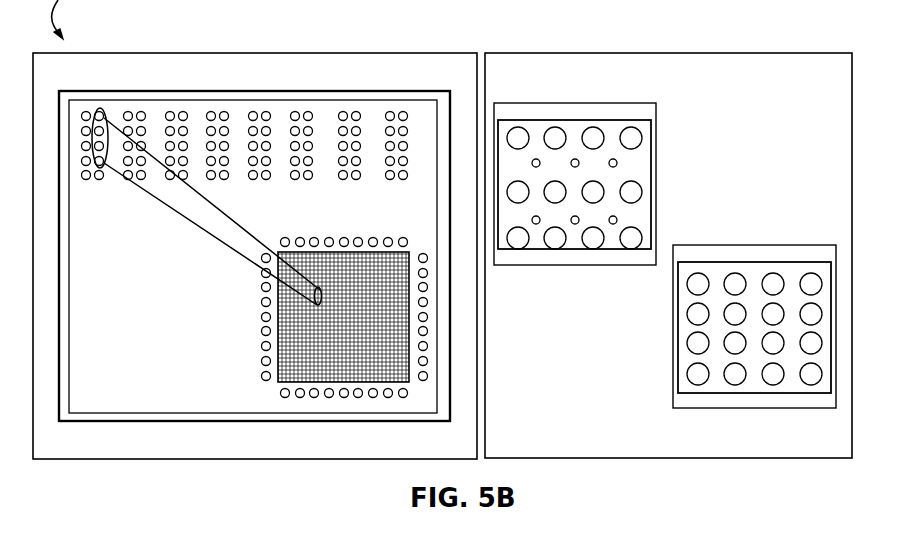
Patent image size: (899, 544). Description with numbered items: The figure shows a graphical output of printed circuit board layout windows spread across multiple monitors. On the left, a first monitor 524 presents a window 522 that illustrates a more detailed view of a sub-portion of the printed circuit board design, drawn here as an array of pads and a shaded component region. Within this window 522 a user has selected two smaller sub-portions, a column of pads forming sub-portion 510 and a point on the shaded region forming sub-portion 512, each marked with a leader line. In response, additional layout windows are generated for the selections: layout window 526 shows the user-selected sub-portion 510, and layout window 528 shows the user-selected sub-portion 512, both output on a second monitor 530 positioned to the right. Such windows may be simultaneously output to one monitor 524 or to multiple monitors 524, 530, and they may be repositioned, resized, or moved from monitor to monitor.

The sub-portion 510 is at (100, 108).
The sub-portion 512 is at (318, 304).
The window 522 is at (259, 91).
The first monitor 524 is at (367, 53).
The layout window 526 is at (603, 103).
The layout window 528 is at (733, 408).
The monitor 530 is at (740, 53).